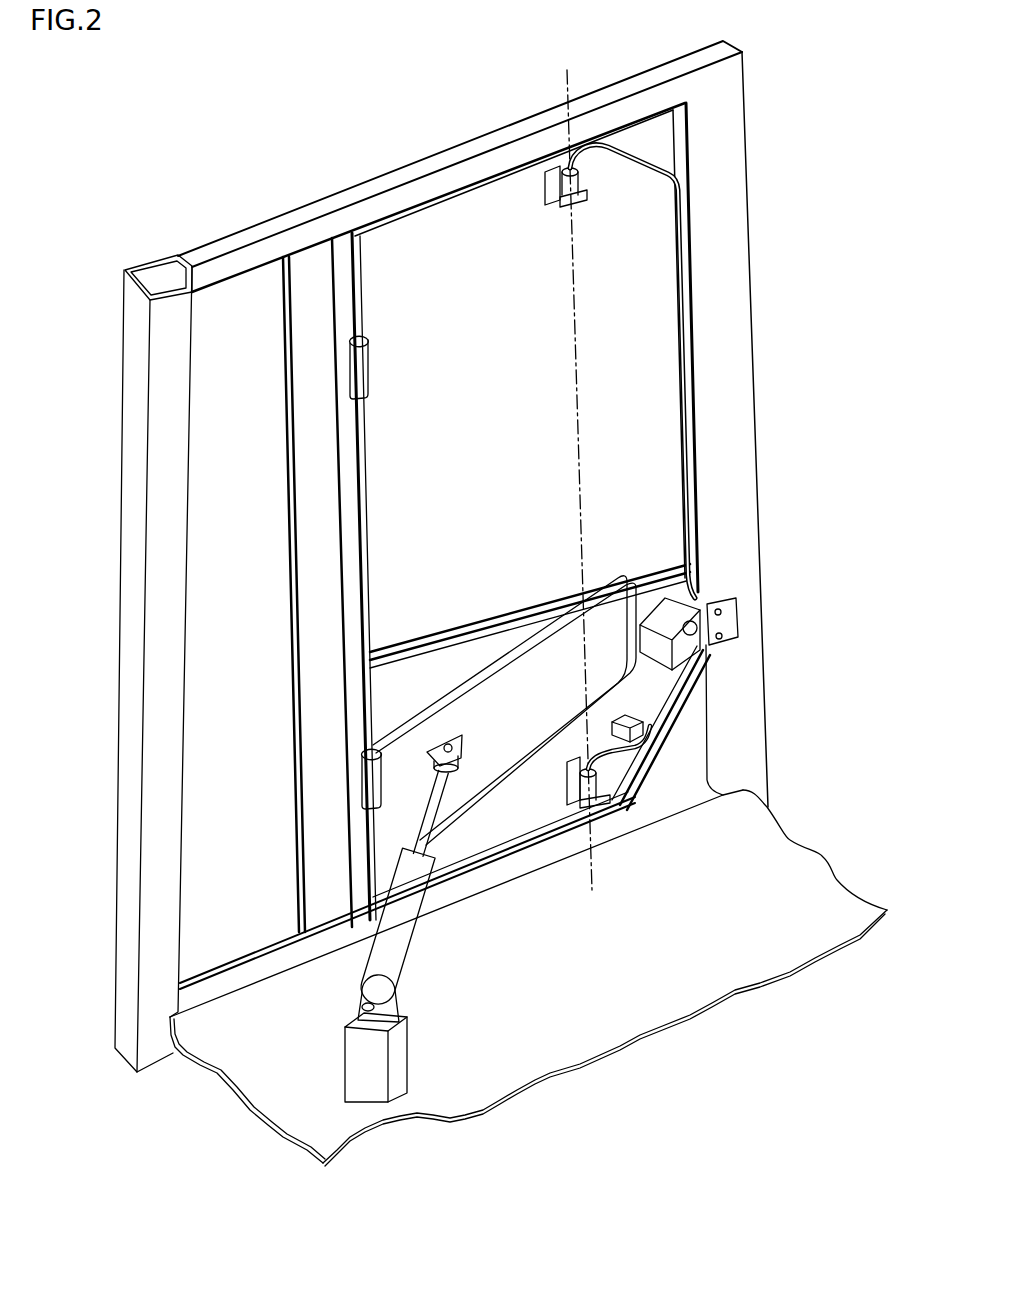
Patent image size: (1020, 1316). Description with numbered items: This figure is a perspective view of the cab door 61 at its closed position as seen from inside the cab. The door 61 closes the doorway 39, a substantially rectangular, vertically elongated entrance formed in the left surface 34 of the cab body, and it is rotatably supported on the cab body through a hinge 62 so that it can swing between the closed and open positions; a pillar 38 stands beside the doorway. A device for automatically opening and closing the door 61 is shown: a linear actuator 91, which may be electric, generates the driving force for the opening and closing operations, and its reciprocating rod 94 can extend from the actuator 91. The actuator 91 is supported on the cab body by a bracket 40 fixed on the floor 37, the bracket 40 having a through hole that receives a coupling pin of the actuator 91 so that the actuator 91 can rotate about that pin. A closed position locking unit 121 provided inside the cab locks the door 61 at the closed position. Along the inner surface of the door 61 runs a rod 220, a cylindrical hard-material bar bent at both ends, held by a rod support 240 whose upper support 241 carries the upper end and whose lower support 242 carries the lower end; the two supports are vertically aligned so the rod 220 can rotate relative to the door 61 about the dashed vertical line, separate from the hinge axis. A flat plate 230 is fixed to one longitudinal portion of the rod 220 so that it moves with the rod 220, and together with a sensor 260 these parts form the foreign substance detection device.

The left surface 34 is at (228, 372).
The floor 37 is at (700, 990).
The pillar 38 is at (135, 483).
The doorway 39 is at (662, 128).
The bracket 40 is at (372, 1070).
The door 61 is at (655, 313).
The hinge 62 is at (362, 372).
The actuator 91 is at (397, 933).
The rod 94 is at (440, 803).
The closed position locking unit 121 is at (698, 598).
The rod 220 is at (693, 229).
The plate 230 is at (670, 720).
The rod support 240 is at (541, 604).
The upper support 241 is at (566, 186).
The lower support 242 is at (608, 767).
The sensor 260 is at (683, 687).